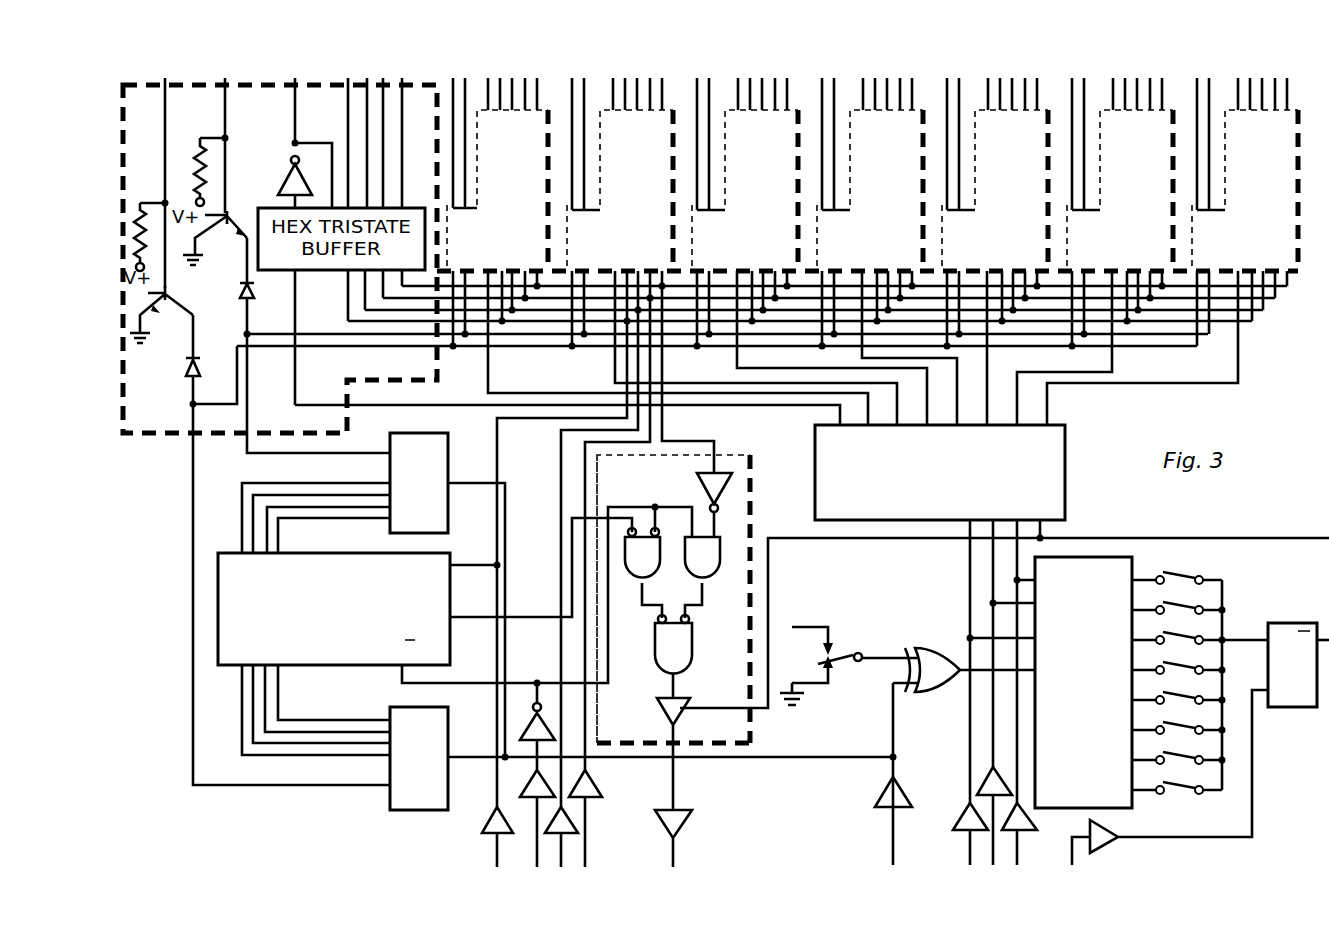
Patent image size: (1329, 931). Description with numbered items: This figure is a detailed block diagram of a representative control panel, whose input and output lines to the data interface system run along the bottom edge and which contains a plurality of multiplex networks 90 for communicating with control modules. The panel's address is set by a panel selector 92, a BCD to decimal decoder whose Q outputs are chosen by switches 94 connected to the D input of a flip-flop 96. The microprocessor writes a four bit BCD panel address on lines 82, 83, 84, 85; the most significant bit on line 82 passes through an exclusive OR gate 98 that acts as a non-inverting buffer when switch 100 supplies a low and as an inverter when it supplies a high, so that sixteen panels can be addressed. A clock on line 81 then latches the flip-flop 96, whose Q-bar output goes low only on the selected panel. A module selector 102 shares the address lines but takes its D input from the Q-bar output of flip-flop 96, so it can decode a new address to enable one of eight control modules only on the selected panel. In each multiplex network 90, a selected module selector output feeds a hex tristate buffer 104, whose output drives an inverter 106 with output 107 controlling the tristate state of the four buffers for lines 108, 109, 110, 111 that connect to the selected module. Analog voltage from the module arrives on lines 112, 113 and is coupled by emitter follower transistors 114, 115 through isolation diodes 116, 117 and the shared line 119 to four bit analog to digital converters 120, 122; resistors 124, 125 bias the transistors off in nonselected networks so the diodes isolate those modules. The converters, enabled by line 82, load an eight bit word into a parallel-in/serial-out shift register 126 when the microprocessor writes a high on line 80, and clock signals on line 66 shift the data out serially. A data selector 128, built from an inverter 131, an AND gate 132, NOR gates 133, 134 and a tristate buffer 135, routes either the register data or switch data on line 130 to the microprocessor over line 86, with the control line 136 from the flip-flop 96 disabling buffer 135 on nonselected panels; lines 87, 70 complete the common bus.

The common bus line 66 is at (494, 853).
The common bus line 70 is at (588, 823).
The line 80 is at (538, 828).
The line 81 is at (1072, 866).
The line 82 is at (891, 838).
The line 83 is at (968, 840).
The line 84 is at (992, 856).
The line 85 is at (1020, 843).
The line 86 is at (677, 853).
The common bus line 87 is at (563, 855).
The multiplex network 90 is at (168, 438).
The panel selector 92 is at (1138, 566).
The switches 94 is at (1183, 570).
The flip-flop 96 is at (1292, 623).
The exclusive OR gate 98 is at (930, 650).
The switch 100 is at (831, 651).
The module selector 102 is at (1070, 443).
The hex tristate buffer 104 is at (316, 272).
The inverter 106 is at (283, 160).
The output 107 is at (292, 129).
The line 108 is at (347, 96).
The line 109 is at (365, 122).
The line 110 is at (402, 115).
The line 111 is at (387, 162).
The line 112 is at (165, 104).
The line 113 is at (227, 104).
The transistor 114 is at (165, 312).
The transistor 115 is at (230, 236).
The isolation diode 116 is at (186, 370).
The isolation diode 117 is at (240, 292).
The line 119 is at (320, 407).
The analog to digital converter 120 is at (400, 812).
The analog to digital converter 122 is at (416, 432).
The resistor 124 is at (150, 200).
The resistor 125 is at (197, 140).
The parallel-in/serial-out shift register 126 is at (352, 672).
The data selector 128 is at (754, 475).
The line 130 is at (717, 448).
The inverter 131 is at (697, 486).
The AND gate 132 is at (718, 583).
The NOR gate 133 is at (660, 572).
The NOR gate 134 is at (692, 649).
The tristate buffer 135 is at (658, 710).
The control line 136 is at (727, 708).